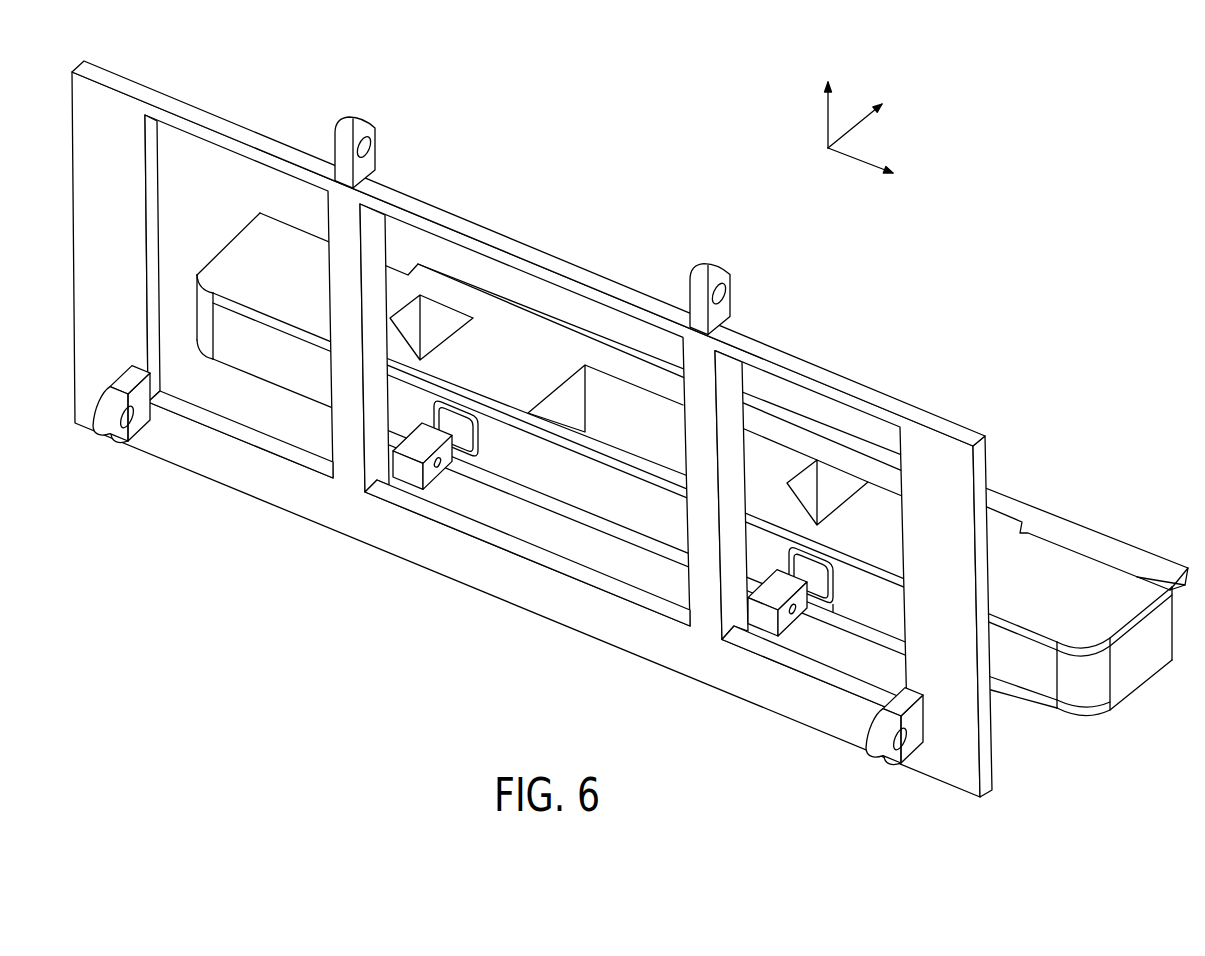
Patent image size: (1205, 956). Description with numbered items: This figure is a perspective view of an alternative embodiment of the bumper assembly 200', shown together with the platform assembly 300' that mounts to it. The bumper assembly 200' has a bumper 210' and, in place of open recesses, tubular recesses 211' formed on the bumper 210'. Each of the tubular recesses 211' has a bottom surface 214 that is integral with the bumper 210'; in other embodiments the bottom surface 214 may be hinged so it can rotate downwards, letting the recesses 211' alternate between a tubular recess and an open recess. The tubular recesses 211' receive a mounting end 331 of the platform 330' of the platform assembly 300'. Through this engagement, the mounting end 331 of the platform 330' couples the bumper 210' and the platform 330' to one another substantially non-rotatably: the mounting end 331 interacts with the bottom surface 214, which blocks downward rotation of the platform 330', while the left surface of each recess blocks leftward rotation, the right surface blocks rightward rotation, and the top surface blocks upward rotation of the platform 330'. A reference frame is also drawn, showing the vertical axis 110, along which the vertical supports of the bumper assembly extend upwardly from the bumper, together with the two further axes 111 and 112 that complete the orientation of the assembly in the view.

The platform assembly 300' is at (532, 416).
The platform 330' is at (528, 236).
The mounting end 331 is at (420, 483).
The bumper assembly 200' is at (700, 460).
The bumper 210' is at (691, 483).
The tubular recesses 211' is at (645, 603).
The bottom surface 214 is at (827, 623).
The vertical axis 110 is at (830, 118).
The first horizontal direction 111 is at (858, 157).
The second horizontal direction 112 is at (855, 128).